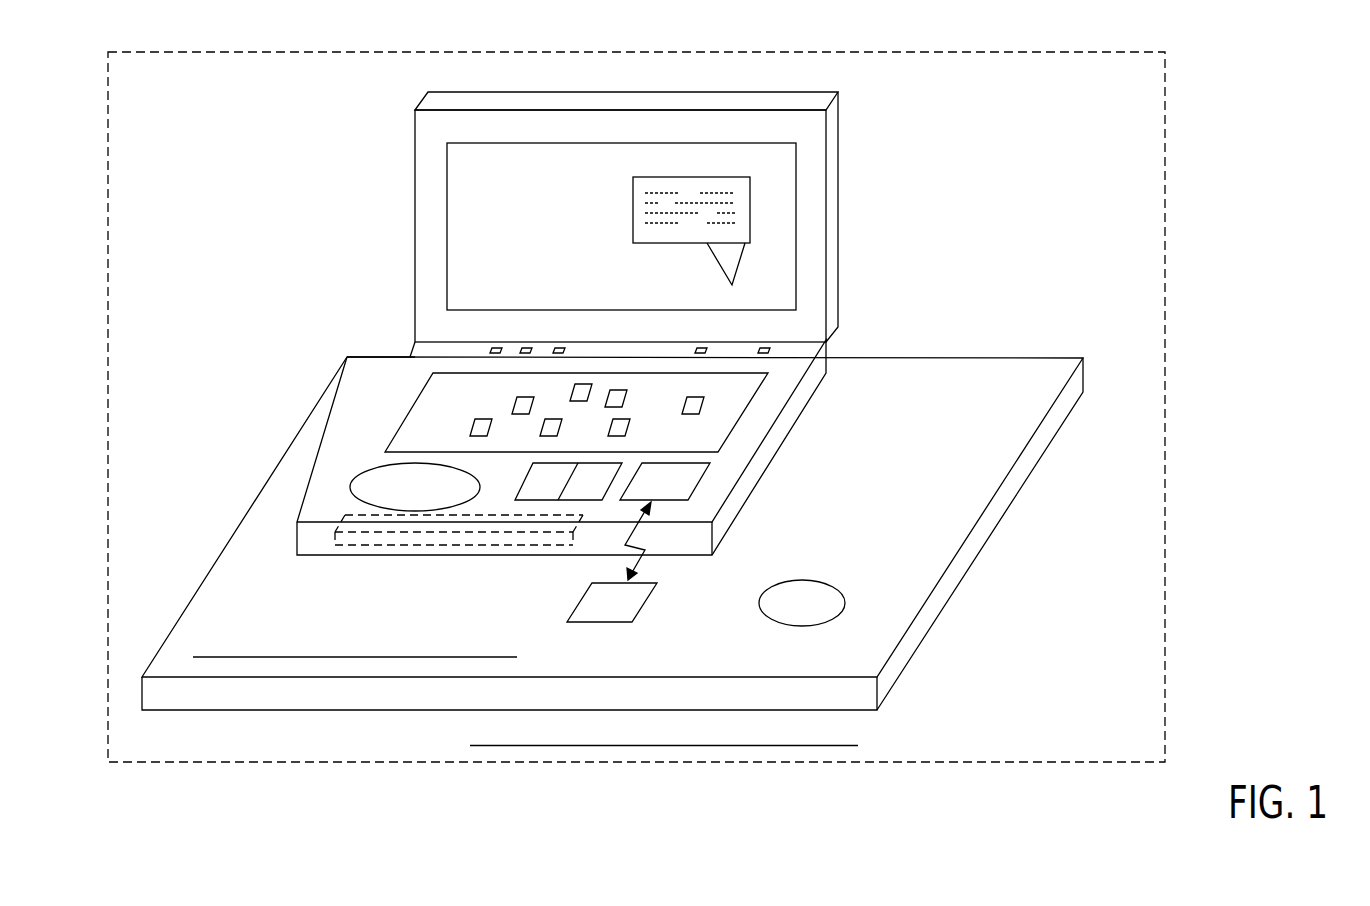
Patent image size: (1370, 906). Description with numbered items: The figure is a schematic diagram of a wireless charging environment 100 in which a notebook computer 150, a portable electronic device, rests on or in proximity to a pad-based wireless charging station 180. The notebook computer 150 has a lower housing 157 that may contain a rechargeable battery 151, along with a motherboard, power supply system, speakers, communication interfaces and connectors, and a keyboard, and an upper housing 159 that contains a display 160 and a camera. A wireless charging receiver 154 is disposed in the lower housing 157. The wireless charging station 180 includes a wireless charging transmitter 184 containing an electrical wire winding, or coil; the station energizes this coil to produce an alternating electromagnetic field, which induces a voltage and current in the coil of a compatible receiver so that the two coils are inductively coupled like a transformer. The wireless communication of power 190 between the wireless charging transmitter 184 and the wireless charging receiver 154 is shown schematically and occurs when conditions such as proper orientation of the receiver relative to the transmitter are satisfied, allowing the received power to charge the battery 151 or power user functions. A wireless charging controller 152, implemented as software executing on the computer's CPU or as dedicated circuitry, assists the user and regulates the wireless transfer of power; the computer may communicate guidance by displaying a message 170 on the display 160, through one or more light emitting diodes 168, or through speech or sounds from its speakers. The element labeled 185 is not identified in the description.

The wireless charging environment 100 is at (906, 52).
The notebook computer 150 is at (828, 226).
The rechargeable battery 151 is at (438, 548).
The wireless charging controller 152 is at (352, 486).
The wireless charging receiver 154 is at (700, 478).
The lower housing 157 is at (773, 386).
The upper housing 159 is at (808, 161).
The display 160 is at (536, 287).
The light emitting diodes 168 is at (525, 349).
The message 170 is at (633, 211).
The wireless charging station 180 is at (983, 550).
The wireless charging transmitter 184 is at (645, 603).
The charging coil C 185 is at (800, 580).
The wireless communication of power 190 is at (647, 542).